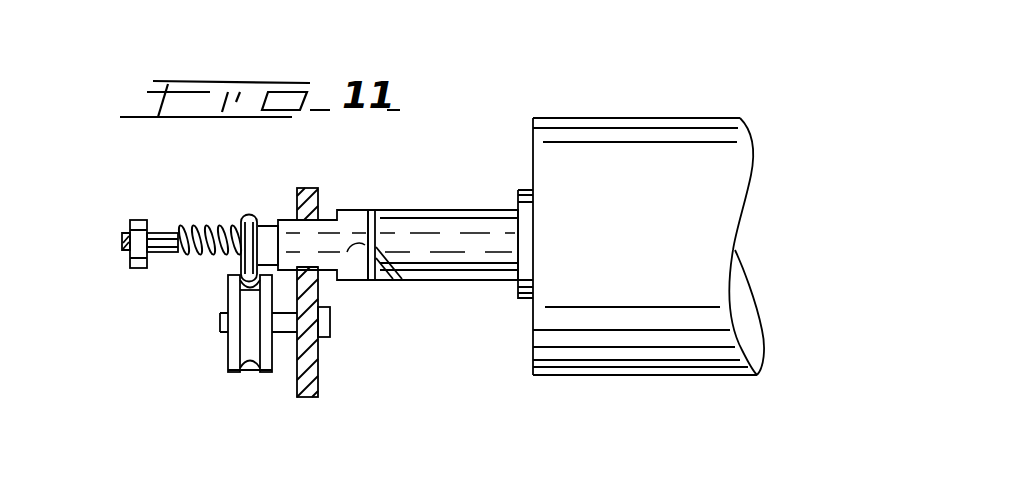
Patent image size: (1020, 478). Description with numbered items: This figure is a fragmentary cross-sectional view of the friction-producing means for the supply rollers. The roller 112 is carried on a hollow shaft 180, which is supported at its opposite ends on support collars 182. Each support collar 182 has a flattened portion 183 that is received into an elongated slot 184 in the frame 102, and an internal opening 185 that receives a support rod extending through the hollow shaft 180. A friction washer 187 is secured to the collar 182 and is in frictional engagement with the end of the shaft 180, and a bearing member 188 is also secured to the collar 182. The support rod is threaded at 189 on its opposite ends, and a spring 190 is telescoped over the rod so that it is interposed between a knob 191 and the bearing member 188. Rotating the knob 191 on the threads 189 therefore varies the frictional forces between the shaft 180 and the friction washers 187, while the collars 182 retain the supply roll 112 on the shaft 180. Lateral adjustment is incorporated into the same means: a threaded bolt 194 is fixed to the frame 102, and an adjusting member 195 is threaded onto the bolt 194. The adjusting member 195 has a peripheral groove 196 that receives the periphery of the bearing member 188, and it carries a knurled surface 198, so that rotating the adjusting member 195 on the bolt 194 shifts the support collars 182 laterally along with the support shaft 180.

The frame 102 is at (320, 388).
The roller 112 is at (538, 112).
The hollow shaft 180 is at (432, 222).
The support collar 182 is at (345, 210).
The flattened portion 183 is at (283, 220).
The elongated slot 184 is at (304, 265).
The internal opening 185 is at (393, 262).
The friction washer 187 is at (372, 210).
The bearing member 188 is at (243, 217).
The threads 189 is at (177, 228).
The spring 190 is at (192, 258).
The knob 191 is at (122, 241).
The threaded bolt 194 is at (325, 337).
The adjusting member 195 is at (238, 382).
The peripheral groove 196 is at (252, 368).
The knurled surface 198 is at (232, 365).